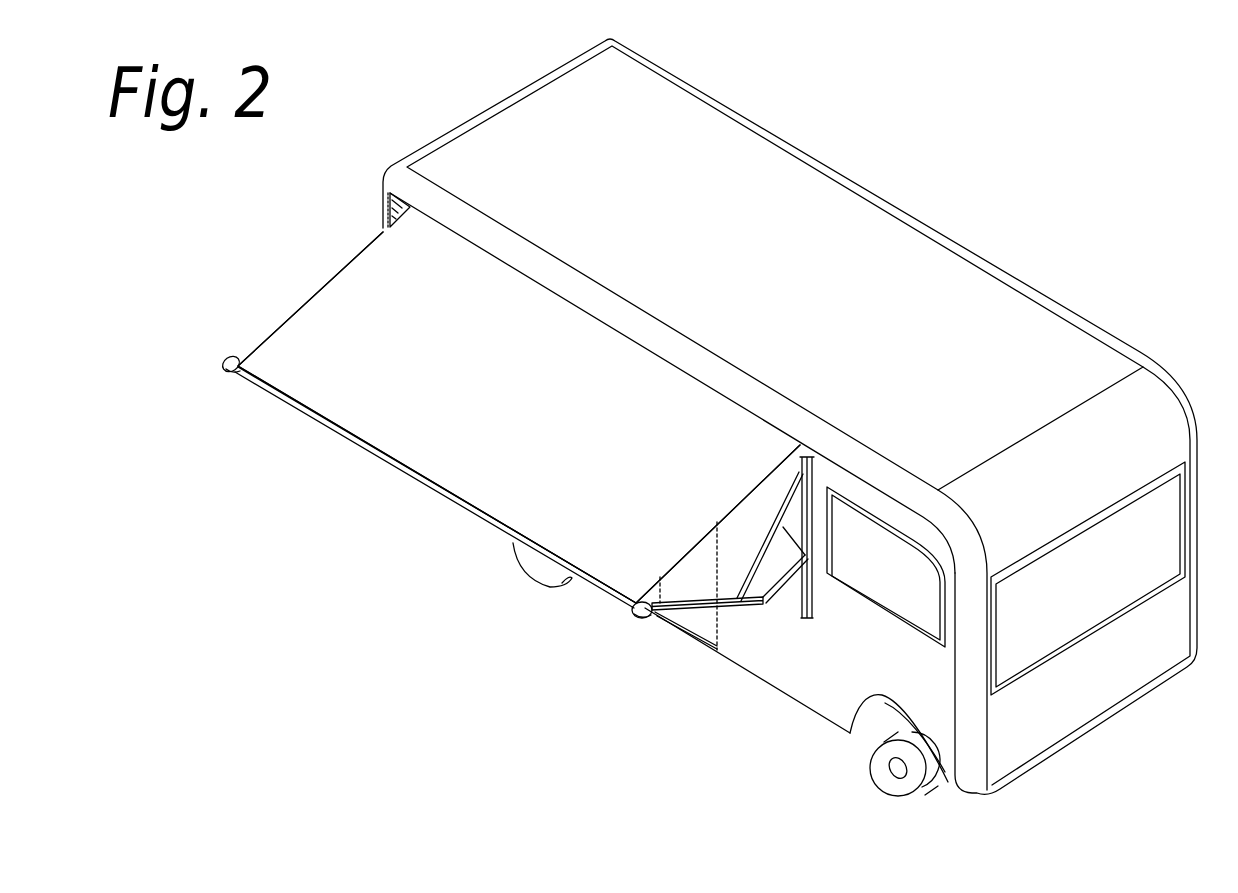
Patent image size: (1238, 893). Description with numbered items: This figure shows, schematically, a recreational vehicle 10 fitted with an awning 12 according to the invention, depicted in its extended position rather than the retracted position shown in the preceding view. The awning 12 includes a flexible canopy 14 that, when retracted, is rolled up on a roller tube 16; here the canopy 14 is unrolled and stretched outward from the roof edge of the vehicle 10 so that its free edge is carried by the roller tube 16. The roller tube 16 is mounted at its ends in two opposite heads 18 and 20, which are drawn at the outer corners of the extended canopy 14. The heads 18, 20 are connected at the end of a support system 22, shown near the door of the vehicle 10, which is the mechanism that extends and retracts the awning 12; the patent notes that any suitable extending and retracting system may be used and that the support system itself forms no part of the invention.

The recreational vehicle 10 is at (998, 268).
The awning 12 is at (327, 278).
The flexible canopy 14 is at (323, 326).
The roller tube 16 is at (305, 425).
The head 18 is at (228, 358).
The head 20 is at (634, 621).
The support system 22 is at (750, 614).